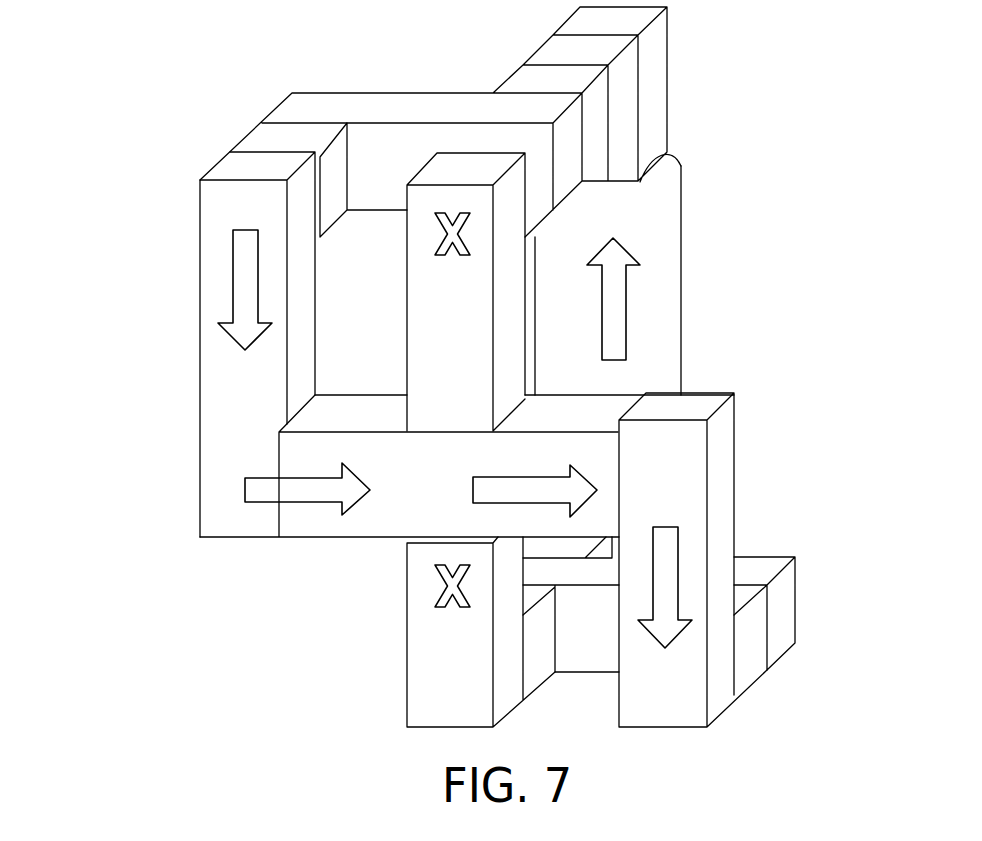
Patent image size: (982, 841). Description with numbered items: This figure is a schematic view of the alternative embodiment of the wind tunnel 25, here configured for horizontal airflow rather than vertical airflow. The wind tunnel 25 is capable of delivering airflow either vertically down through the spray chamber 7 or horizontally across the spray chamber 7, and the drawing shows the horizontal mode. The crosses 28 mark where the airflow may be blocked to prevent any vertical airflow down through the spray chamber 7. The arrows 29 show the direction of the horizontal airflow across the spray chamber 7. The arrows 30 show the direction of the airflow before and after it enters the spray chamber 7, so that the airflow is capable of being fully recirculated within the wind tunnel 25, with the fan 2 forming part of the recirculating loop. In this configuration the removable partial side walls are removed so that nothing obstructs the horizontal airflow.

The fan 2 is at (681, 230).
The spray chamber 7 is at (353, 538).
The wind tunnel 25 is at (152, 341).
The crosses 28 is at (455, 256).
The arrows 29 is at (295, 504).
The arrows 30 is at (234, 285).